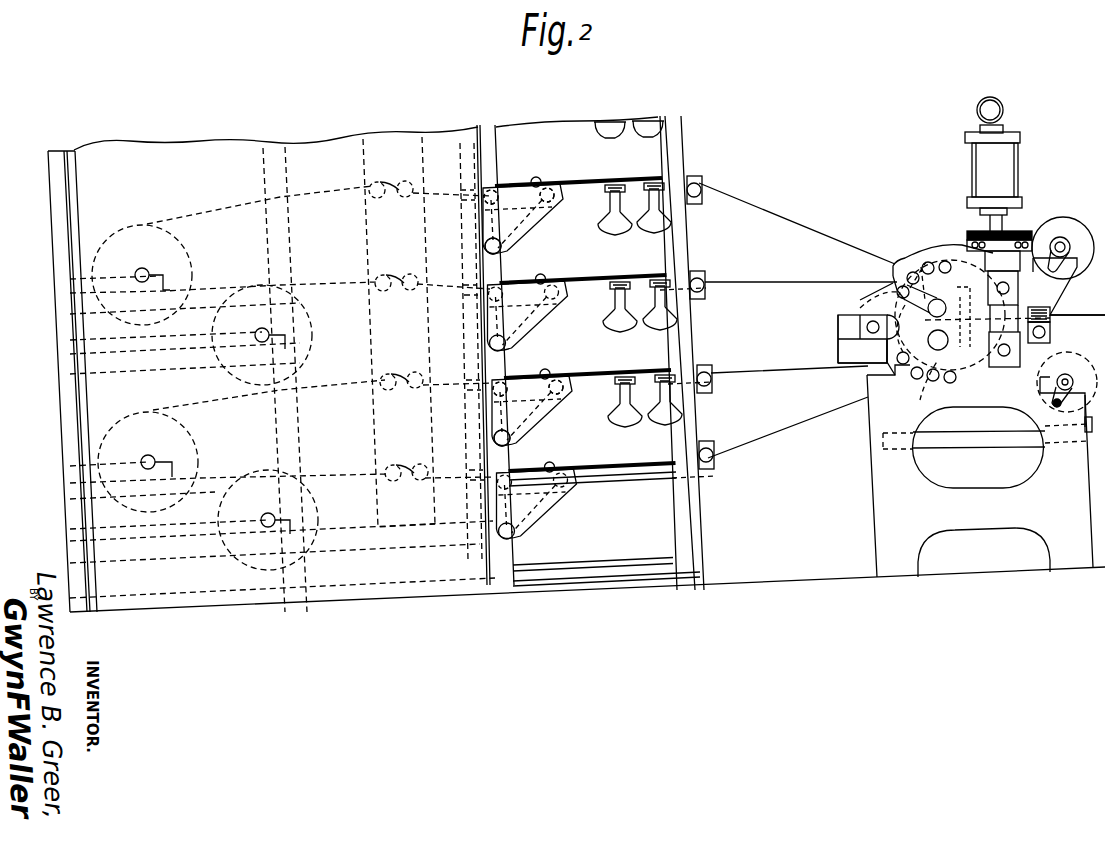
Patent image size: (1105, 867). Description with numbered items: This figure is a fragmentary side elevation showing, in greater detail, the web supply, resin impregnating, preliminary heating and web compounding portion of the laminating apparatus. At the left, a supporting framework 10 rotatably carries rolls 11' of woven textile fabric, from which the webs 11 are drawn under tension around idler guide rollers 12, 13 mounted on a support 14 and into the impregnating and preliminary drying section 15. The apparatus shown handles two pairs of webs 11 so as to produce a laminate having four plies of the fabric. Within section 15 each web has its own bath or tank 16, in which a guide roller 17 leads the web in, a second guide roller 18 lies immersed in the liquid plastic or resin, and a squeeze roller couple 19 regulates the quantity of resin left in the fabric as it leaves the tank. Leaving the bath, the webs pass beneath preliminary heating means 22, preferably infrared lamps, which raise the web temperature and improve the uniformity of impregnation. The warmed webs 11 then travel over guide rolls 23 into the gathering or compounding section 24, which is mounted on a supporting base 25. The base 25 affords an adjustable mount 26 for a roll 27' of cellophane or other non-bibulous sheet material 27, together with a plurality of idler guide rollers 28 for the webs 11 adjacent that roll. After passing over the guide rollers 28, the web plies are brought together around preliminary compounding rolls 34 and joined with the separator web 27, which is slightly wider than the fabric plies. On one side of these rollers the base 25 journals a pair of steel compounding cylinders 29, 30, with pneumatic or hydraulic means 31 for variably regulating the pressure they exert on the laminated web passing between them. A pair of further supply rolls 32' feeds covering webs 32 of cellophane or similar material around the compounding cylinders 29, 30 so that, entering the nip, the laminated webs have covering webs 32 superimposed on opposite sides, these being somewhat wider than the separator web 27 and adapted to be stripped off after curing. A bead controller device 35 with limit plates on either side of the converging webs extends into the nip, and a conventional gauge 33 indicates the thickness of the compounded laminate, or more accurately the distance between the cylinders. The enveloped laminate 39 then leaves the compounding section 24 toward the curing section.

The supporting framework 10 is at (63, 233).
The webs 11 is at (659, 330).
The rolls of woven textile fabric 11' is at (282, 392).
The idler guide roller 12 is at (370, 197).
The idler guide roller 13 is at (403, 181).
The support 14 is at (363, 160).
The impregnating and preliminary drying section 15 is at (570, 132).
The bath or tank 16 is at (538, 223).
The guide roller 17 is at (496, 192).
The second guide roller 18 is at (505, 250).
The squeeze roller couple 19 is at (540, 180).
The preliminary heating means 22 is at (647, 139).
The guide rolls 23 is at (701, 185).
The compounding section 24 is at (922, 250).
The supporting base 25 is at (867, 422).
The adjustable mount 26 is at (870, 326).
The non-bibulous sheet material 27 is at (862, 369).
The roll of cellophane 27' is at (818, 334).
The idler guide rollers 28 is at (895, 280).
The compounding cylinder 29 is at (955, 258).
The compounding cylinder 30 is at (992, 372).
The pneumatic or hydraulic means 31 is at (1016, 158).
The covering material 32 is at (1066, 356).
The supply rolls of covering material 32' is at (1068, 242).
The gauge 33 is at (1052, 333).
The preliminary compounding rolls 34 is at (910, 265).
The bead controller device 35 is at (940, 250).
The enveloped laminate 39 is at (1093, 315).